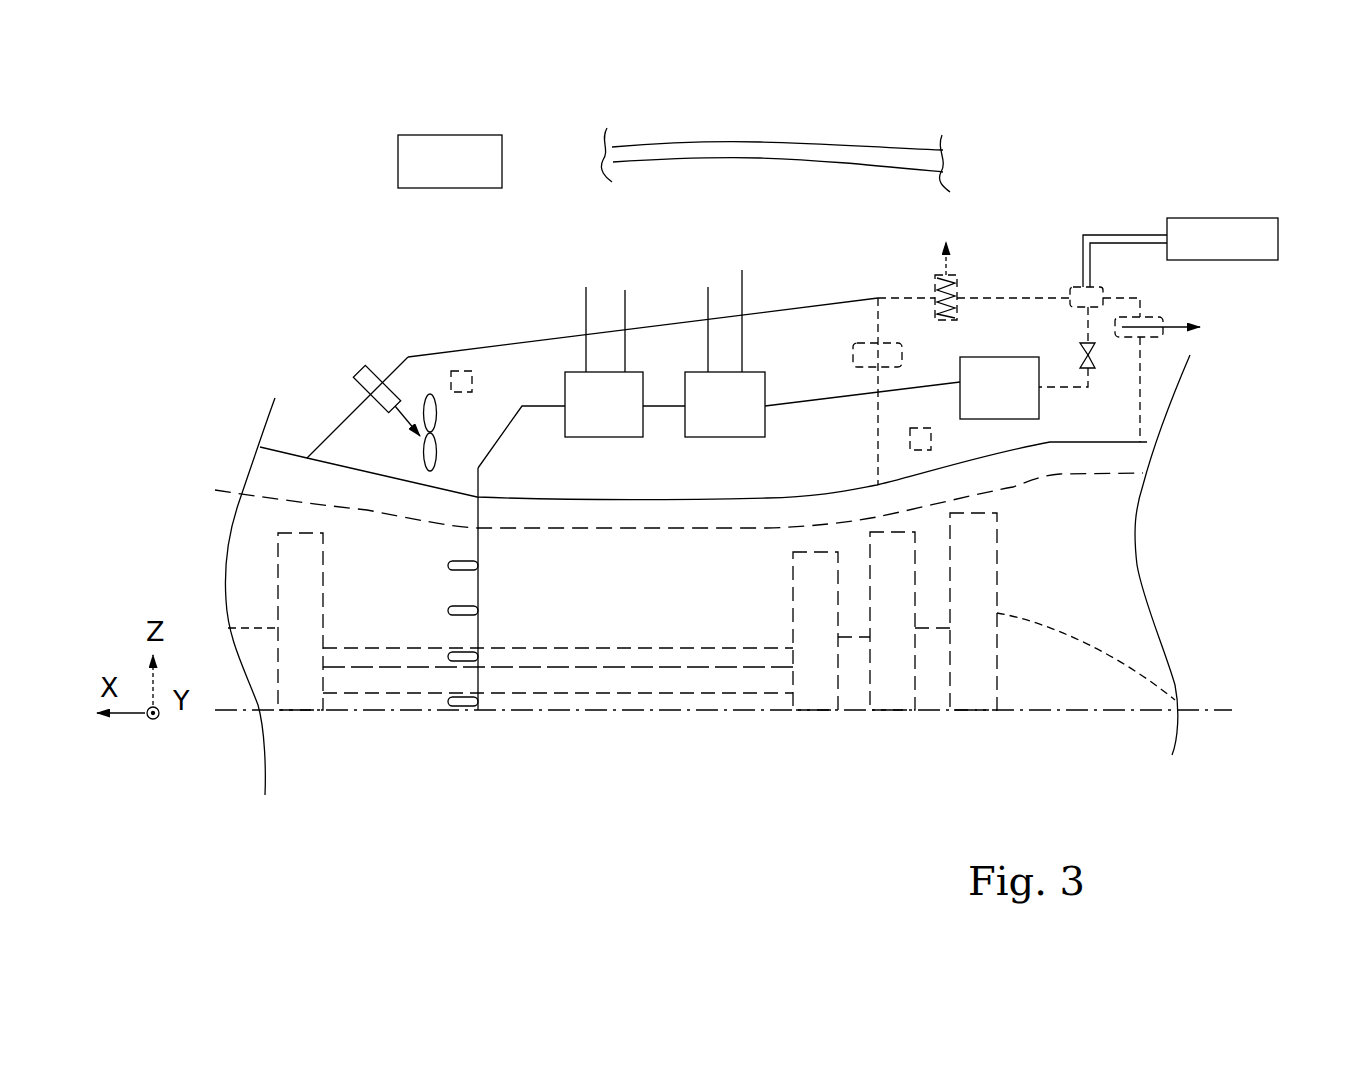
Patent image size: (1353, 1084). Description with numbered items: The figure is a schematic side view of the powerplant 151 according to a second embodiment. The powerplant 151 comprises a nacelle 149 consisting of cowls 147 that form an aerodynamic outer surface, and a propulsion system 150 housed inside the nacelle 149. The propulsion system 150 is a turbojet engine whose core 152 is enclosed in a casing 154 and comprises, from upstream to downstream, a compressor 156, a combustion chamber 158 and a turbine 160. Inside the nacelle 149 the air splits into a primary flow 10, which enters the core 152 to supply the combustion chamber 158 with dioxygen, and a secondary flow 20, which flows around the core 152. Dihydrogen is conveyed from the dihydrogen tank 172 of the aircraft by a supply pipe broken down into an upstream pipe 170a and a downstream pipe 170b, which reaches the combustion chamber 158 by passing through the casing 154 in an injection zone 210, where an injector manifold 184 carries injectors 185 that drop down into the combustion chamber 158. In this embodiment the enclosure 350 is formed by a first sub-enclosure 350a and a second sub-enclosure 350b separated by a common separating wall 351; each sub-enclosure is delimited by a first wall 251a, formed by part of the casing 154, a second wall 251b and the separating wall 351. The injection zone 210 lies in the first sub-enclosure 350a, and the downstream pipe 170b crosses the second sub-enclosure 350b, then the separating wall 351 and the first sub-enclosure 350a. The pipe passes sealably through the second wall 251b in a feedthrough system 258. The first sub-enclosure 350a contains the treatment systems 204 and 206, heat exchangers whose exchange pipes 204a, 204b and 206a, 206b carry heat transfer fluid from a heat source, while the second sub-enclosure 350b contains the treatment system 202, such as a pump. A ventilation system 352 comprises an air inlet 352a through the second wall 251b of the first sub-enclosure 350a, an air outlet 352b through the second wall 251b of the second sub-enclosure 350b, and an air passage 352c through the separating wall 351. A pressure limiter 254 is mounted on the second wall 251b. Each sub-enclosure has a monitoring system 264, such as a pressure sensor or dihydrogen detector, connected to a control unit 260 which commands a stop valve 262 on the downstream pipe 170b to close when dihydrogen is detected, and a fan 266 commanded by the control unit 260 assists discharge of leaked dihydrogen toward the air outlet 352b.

The primary flow 10 is at (195, 585).
The secondary flow 20 is at (195, 250).
The cowls 147 is at (826, 142).
The nacelle 149 is at (945, 170).
The propulsion system 150 is at (205, 412).
The powerplant 151 is at (237, 318).
The core 152 is at (1167, 592).
The casing 154 is at (1137, 458).
The compressor 156 is at (300, 693).
The combustion chamber 158 is at (362, 616).
The turbine 160 is at (817, 693).
The upstream pipe 170a is at (1125, 243).
The downstream pipe 170b is at (822, 400).
The dihydrogen tank 172 is at (1248, 255).
The injector manifold 184 is at (478, 622).
The injectors 185 is at (460, 706).
The treatment system 202 is at (975, 401).
The treatment system 204 is at (751, 416).
The exchange pipe 204a is at (707, 300).
The exchange pipe 204b is at (744, 290).
The treatment system 206 is at (630, 416).
The exchange pipe 206a is at (583, 300).
The exchange pipe 206b is at (625, 293).
The injection zone 210 is at (477, 497).
The first wall 251a is at (687, 515).
The second wall 251b is at (427, 355).
The pressure limiter 254 is at (958, 287).
The feedthrough system 258 is at (1097, 284).
The control unit 260 is at (476, 176).
The stop valve 262 is at (1095, 360).
The monitoring system 264 is at (462, 382).
The fan 266 is at (430, 449).
The enclosure 350 is at (407, 254).
The first sub-enclosure 350a is at (572, 486).
The second sub-enclosure 350b is at (1057, 431).
The separating wall 351 is at (878, 297).
The ventilation system 352 is at (282, 275).
The air inlet 352a is at (385, 376).
The air outlet 352b is at (1147, 327).
The air passage 352c is at (872, 357).